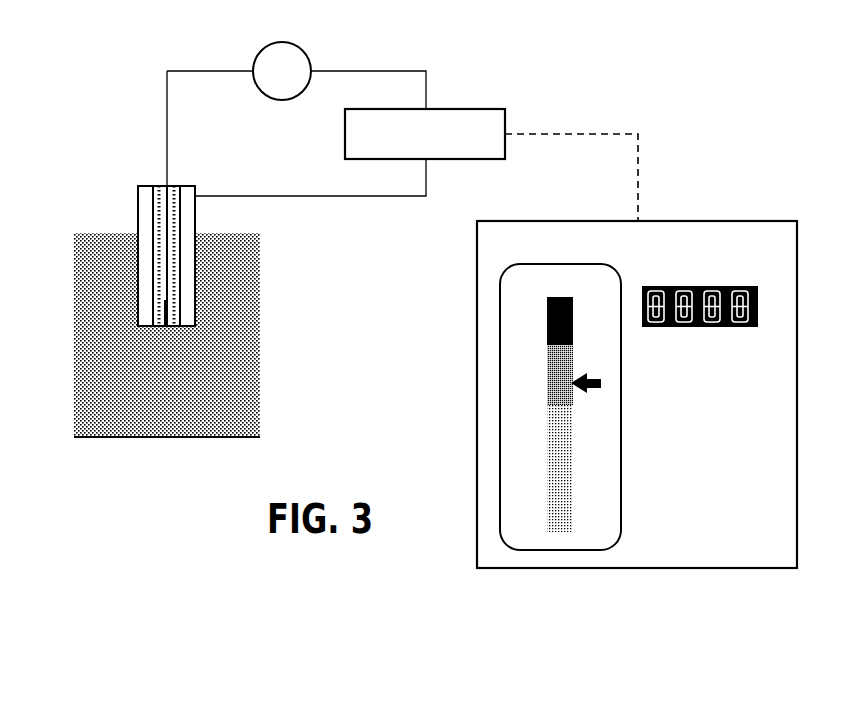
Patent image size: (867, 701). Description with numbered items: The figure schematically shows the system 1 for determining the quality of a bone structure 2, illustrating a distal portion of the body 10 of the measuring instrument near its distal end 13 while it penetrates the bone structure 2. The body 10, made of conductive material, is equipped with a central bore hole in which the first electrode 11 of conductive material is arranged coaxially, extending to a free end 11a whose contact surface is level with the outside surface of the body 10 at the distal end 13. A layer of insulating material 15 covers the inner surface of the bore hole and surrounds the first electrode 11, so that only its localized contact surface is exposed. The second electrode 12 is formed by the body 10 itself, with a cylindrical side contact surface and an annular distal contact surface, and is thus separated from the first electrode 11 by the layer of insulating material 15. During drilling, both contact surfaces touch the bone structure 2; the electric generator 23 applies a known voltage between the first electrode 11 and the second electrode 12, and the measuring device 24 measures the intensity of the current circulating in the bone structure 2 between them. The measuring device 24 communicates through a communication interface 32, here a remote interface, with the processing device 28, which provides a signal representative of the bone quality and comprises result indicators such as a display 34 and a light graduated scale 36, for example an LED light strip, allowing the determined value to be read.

The system 1 is at (548, 87).
The bone structure 2 is at (253, 405).
The body 10 is at (135, 258).
The first electrode 11 is at (166, 273).
The free end 11a is at (163, 327).
The second electrode 12 is at (184, 283).
The distal end 13 is at (179, 332).
The layer of insulating material 15 is at (158, 185).
The electric generator 23 is at (293, 43).
The measuring device 24 is at (485, 108).
The processing device 28 is at (702, 221).
The communication interface 32 is at (609, 132).
The display 34 is at (737, 287).
The light graduated scale 36 is at (547, 457).